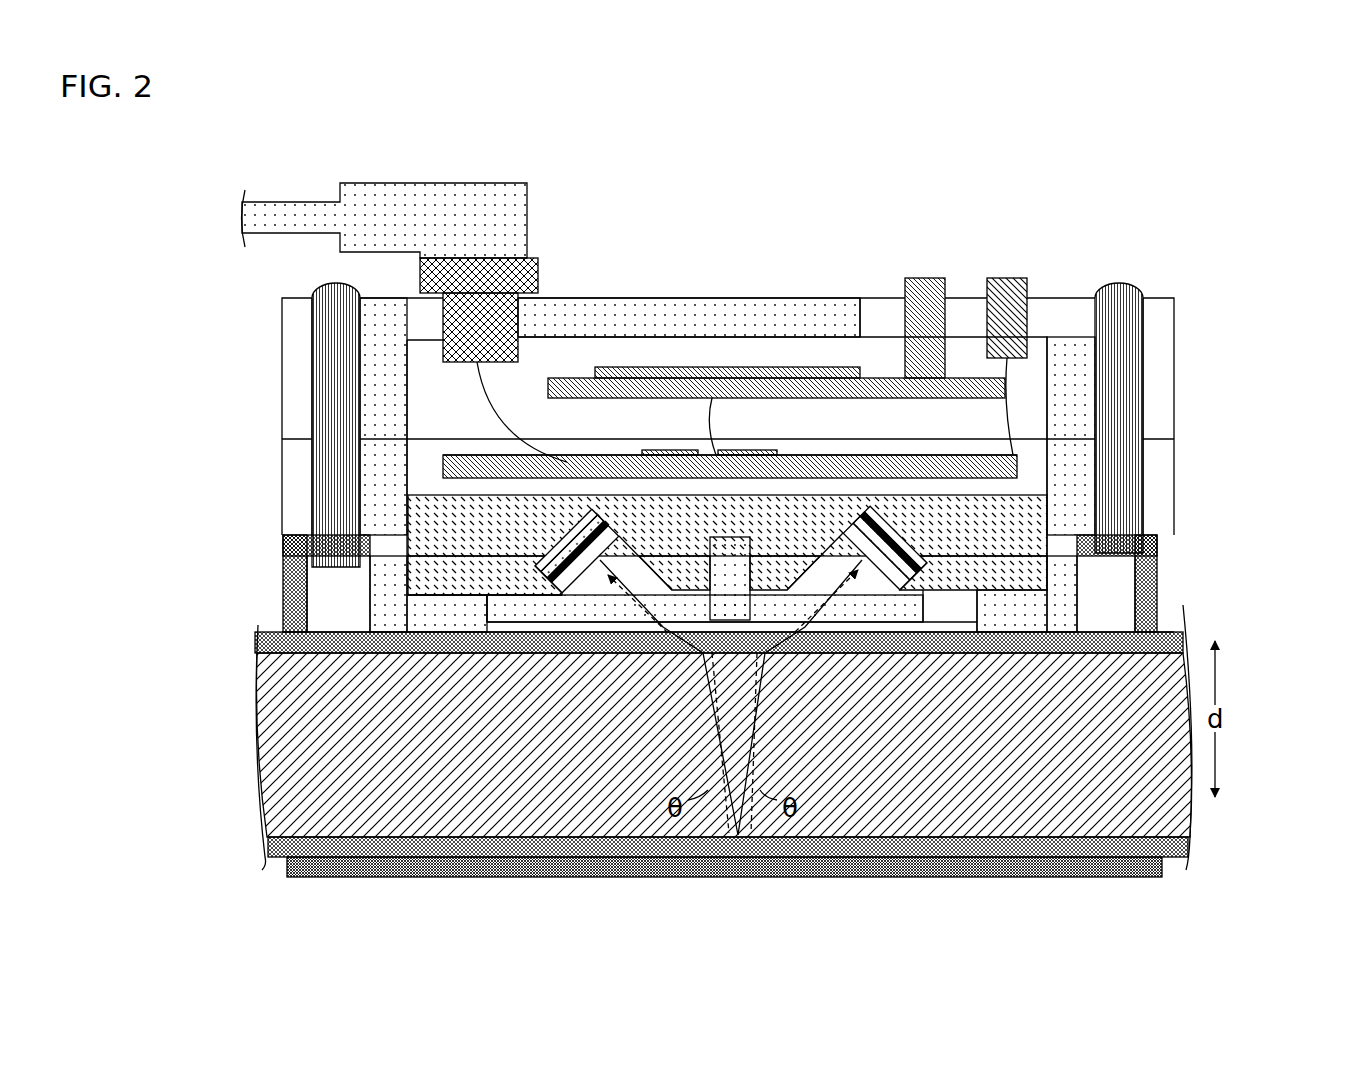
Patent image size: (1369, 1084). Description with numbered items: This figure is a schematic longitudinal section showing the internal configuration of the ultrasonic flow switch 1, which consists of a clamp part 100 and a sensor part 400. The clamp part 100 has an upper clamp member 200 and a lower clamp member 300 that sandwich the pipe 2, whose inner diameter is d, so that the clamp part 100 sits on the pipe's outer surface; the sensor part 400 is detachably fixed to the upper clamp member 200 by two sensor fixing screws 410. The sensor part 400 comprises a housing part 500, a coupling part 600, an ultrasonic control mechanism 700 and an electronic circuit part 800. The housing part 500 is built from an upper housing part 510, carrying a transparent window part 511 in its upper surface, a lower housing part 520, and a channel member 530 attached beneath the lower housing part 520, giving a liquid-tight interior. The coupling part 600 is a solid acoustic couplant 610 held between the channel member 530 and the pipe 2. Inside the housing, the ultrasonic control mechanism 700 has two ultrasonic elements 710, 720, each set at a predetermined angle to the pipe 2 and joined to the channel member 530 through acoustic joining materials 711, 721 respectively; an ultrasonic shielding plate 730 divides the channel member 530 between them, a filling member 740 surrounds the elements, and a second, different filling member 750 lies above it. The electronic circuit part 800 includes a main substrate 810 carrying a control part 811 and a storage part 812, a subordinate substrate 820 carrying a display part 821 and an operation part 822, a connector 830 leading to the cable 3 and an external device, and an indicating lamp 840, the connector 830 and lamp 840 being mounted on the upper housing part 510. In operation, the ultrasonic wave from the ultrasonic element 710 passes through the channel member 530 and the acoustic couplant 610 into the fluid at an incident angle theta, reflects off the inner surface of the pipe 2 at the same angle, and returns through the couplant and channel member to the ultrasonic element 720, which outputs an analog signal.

The flow switch 1 is at (1308, 151).
The pipe 2 is at (1135, 815).
The cable 3 is at (260, 202).
The clamp part 100 is at (173, 578).
The upper clamp member 200 is at (292, 611).
The lower clamp member 300 is at (287, 870).
The sensor part 400 is at (341, 201).
The sensor fixing screw 410 is at (336, 290).
The housing part 500 is at (1180, 345).
The upper housing part 510 is at (290, 360).
The window part 511 is at (615, 338).
The lower housing part 520 is at (388, 622).
The channel member 530 is at (515, 617).
The coupling part 600 is at (556, 652).
The acoustic couplant 610 is at (947, 622).
The ultrasonic control mechanism 700 is at (729, 665).
The ultrasonic element 710 is at (920, 565).
The acoustic joining material 711 is at (928, 575).
The ultrasonic element 720 is at (545, 567).
The acoustic joining material 721 is at (560, 580).
The ultrasonic shielding plate 730 is at (743, 577).
The filling member 740 is at (455, 582).
The filling member 750 is at (578, 462).
The electronic circuit part 800 is at (1047, 148).
The main substrate 810 is at (612, 455).
The control part 811 is at (676, 450).
The storage part 812 is at (758, 450).
The subordinate substrate 820 is at (722, 388).
The display part 821 is at (832, 368).
The operation part 822 is at (950, 362).
The connector 830 is at (540, 275).
The indicating lamp 840 is at (1005, 285).